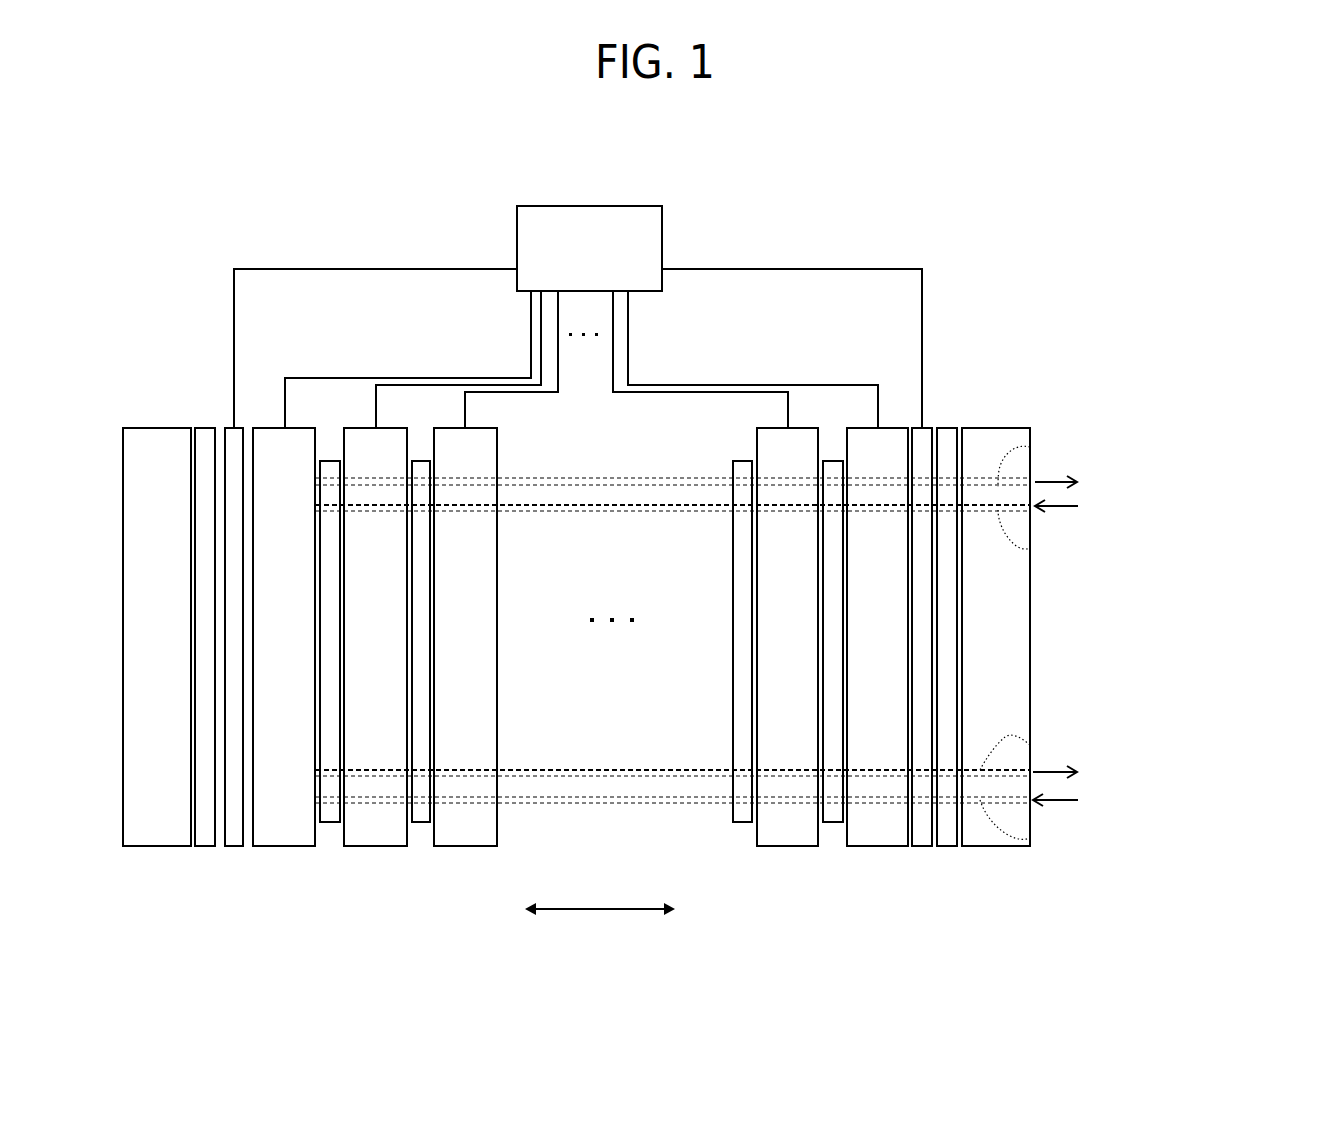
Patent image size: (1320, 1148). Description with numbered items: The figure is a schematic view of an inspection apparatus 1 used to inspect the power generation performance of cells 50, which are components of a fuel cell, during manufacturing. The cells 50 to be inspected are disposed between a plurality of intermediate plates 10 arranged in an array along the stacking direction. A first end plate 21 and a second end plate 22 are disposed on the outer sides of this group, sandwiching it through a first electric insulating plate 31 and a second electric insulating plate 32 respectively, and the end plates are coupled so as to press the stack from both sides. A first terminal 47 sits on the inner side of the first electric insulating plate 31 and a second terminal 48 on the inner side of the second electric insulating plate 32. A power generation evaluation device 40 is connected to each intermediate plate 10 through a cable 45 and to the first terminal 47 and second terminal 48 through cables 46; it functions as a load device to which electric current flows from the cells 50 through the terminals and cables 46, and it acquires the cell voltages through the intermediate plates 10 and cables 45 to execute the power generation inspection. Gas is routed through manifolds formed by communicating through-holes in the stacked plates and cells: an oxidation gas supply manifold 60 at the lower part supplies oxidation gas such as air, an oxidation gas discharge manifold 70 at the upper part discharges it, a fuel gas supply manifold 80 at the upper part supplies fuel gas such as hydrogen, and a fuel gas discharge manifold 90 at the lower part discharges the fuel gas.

The inspection apparatus 1 is at (622, 125).
The intermediate plate 10 is at (282, 848).
The first end plate 21 is at (152, 425).
The second end plate 22 is at (1000, 425).
The first electric insulating plate 31 is at (207, 425).
The second electric insulating plate 32 is at (950, 425).
The power generation evaluation device 40 is at (664, 253).
The cable 45 is at (345, 378).
The cable 46 is at (325, 268).
The first terminal 47 is at (227, 848).
The second terminal 48 is at (922, 848).
The cell 50 is at (328, 824).
The oxidation gas supply manifold 60 is at (1030, 838).
The oxidation gas discharge manifold 70 is at (1030, 447).
The fuel gas supply manifold 80 is at (1030, 548).
The fuel gas discharge manifold 90 is at (1030, 745).